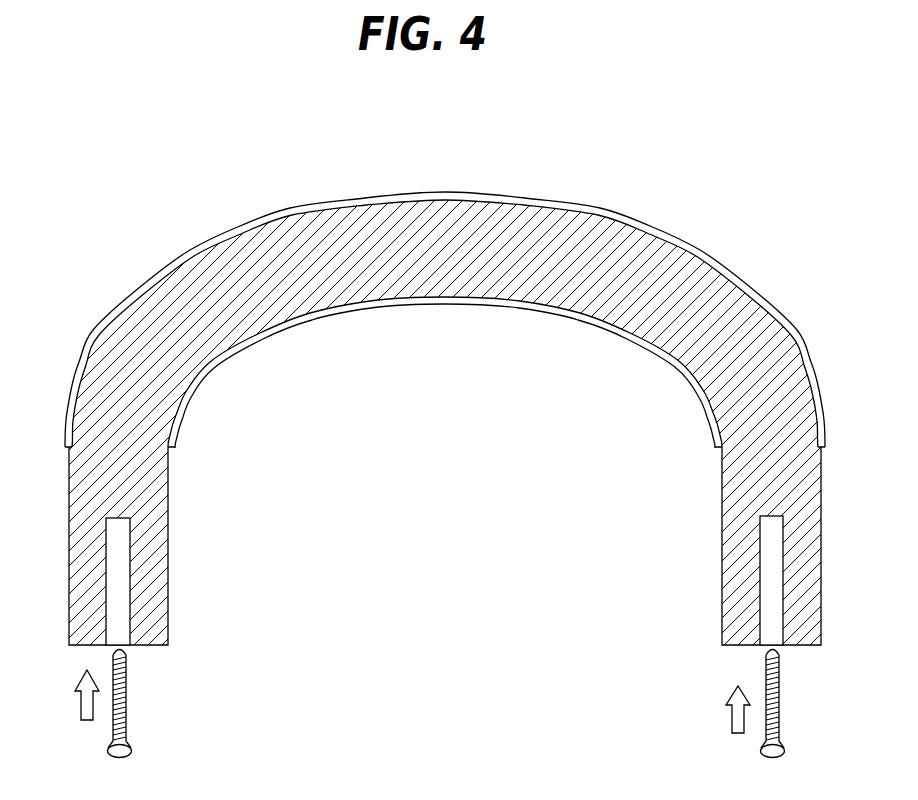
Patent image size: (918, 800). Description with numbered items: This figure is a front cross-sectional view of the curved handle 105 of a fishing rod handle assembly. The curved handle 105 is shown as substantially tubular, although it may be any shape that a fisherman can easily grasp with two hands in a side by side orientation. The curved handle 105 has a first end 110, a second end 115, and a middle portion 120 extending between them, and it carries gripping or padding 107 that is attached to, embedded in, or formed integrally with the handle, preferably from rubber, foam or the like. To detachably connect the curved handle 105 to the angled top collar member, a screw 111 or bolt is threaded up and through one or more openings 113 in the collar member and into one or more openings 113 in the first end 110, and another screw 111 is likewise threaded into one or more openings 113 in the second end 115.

The curved handle 105 is at (583, 136).
The gripping or padding 107 is at (800, 335).
The first end 110 is at (169, 625).
The screw 111 is at (128, 710).
The openings 113 is at (114, 558).
The second end 115 is at (813, 622).
The middle portion 120 is at (452, 259).